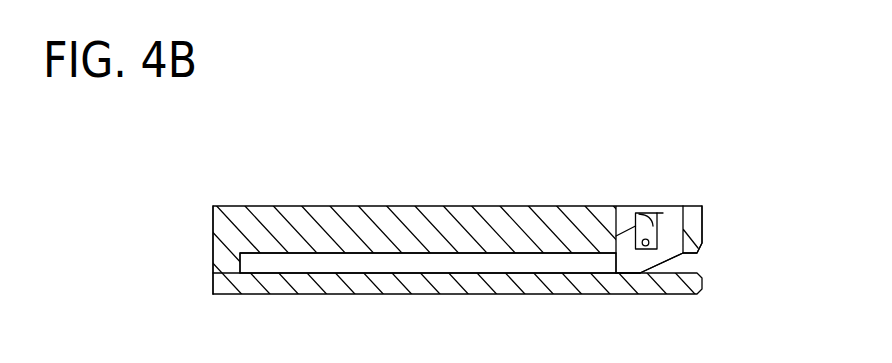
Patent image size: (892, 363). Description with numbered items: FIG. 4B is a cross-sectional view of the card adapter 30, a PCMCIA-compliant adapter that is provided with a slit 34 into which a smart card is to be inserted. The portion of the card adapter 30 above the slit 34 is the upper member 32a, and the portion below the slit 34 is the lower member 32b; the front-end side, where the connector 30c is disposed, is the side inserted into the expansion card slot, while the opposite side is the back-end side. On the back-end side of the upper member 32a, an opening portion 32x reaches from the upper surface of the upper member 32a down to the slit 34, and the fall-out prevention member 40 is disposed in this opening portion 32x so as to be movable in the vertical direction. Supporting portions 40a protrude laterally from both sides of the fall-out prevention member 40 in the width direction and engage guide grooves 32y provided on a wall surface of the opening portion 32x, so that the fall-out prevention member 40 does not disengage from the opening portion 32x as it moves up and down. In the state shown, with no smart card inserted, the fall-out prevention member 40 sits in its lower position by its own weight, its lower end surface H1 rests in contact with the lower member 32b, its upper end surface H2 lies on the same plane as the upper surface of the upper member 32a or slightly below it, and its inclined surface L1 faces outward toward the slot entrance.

The card adapter 30 is at (357, 137).
The connector 30c is at (213, 239).
The upper member 32a is at (407, 206).
The lower member 32b is at (413, 294).
The opening portion 32x is at (617, 218).
The guide groove 32y is at (650, 213).
The slit 34 is at (527, 262).
The fall-out prevention member 40 is at (684, 221).
The supporting portion 40a is at (658, 247).
The lower end surface H1 is at (632, 274).
The upper end surface H2 is at (660, 212).
The inclined surface L1 is at (668, 259).